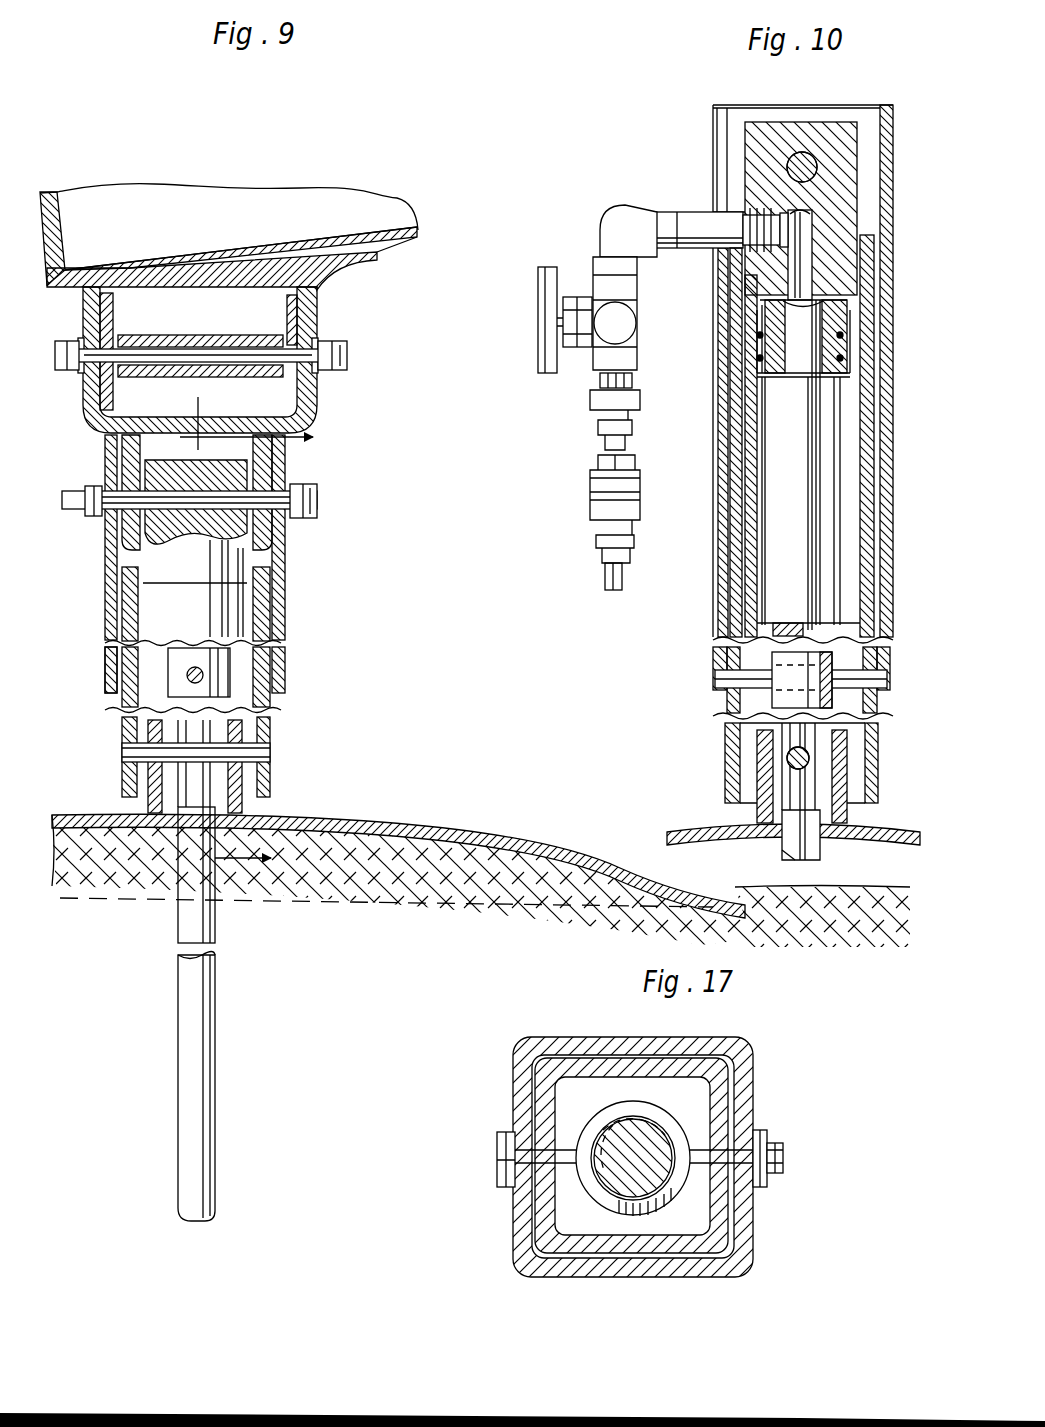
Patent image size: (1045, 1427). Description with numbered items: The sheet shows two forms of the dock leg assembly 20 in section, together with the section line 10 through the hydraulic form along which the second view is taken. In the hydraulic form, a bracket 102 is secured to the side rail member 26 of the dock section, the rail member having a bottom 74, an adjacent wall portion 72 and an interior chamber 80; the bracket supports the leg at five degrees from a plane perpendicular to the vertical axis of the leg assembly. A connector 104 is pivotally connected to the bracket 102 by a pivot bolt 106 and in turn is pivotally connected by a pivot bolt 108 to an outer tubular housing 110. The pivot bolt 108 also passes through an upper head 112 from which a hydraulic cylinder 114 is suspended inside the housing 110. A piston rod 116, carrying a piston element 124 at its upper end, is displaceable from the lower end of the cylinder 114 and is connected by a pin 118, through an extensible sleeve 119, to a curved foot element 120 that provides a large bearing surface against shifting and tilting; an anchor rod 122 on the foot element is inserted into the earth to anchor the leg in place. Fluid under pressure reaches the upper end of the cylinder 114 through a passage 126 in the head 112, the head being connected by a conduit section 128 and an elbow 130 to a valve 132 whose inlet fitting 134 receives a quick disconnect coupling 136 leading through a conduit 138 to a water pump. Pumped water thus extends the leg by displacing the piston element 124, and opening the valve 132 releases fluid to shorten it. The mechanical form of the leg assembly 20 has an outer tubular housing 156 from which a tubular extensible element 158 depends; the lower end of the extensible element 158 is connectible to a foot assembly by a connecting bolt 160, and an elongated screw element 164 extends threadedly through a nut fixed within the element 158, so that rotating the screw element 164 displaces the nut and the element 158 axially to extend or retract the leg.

In FIG. 9, the side rail member 26 is at (293, 182).
In FIG. 9, the sloped plate of body 72 is at (63, 228).
In FIG. 9, the chamber 80 is at (257, 229).
In FIG. 9, the bottom 74 is at (397, 242).
In FIG. 9, the bracket 102 is at (322, 305).
In FIG. 9, the connector 104 is at (103, 417).
In FIG. 9, the pivot bolt 106 is at (347, 353).
In FIG. 9, the section line 10— 10 is at (263, 648).
In FIG. 9, the pivot bolt 108 is at (317, 505).
In FIG. 10, the pivot bolt 108 is at (802, 152).
In FIG. 9, the outer tubular housing 110 is at (280, 552).
In FIG. 10, the outer tubular housing 110 is at (717, 605).
In FIG. 9, the upper head 112 is at (160, 553).
In FIG. 10, the upper head 112 is at (843, 167).
In FIG. 9, the hydraulic cylinder 114 is at (227, 598).
In FIG. 10, the hydraulic cylinder 114 is at (750, 507).
In FIG. 9, the piston rod 116 is at (210, 690).
In FIG. 10, the piston rod 116 is at (813, 567).
In FIG. 9, the pin 118 is at (197, 675).
In FIG. 10, the pin 118 is at (720, 680).
In FIG. 9, the extensible sleeve 119 is at (120, 673).
In FIG. 10, the extensible sleeve 119 is at (863, 627).
In FIG. 9, the curved foot element 120 is at (356, 814).
In FIG. 10, the curved foot element 120 is at (702, 825).
In FIG. 9, the anchor rod 122 is at (200, 920).
In FIG. 10, the piston element 124 is at (853, 325).
In FIG. 10, the passage 126 is at (807, 227).
In FIG. 10, the conduit section 128 is at (693, 225).
In FIG. 10, the elbow 130 is at (617, 230).
In FIG. 10, the valve 132 is at (573, 285).
In FIG. 10, the inlet fitting 134 is at (608, 428).
In FIG. 10, the quick disconnect coupling 136 is at (582, 483).
In FIG. 10, the conduit 138 is at (607, 560).
In FIG. 17, the leg assembly 20 is at (491, 1059).
In FIG. 17, the outer tubular housing 156 is at (747, 1081).
In FIG. 17, the tubular extensible element 158 is at (582, 1062).
In FIG. 17, the connecting bolt 160 is at (783, 1160).
In FIG. 17, the elongated screw element 164 is at (660, 1176).